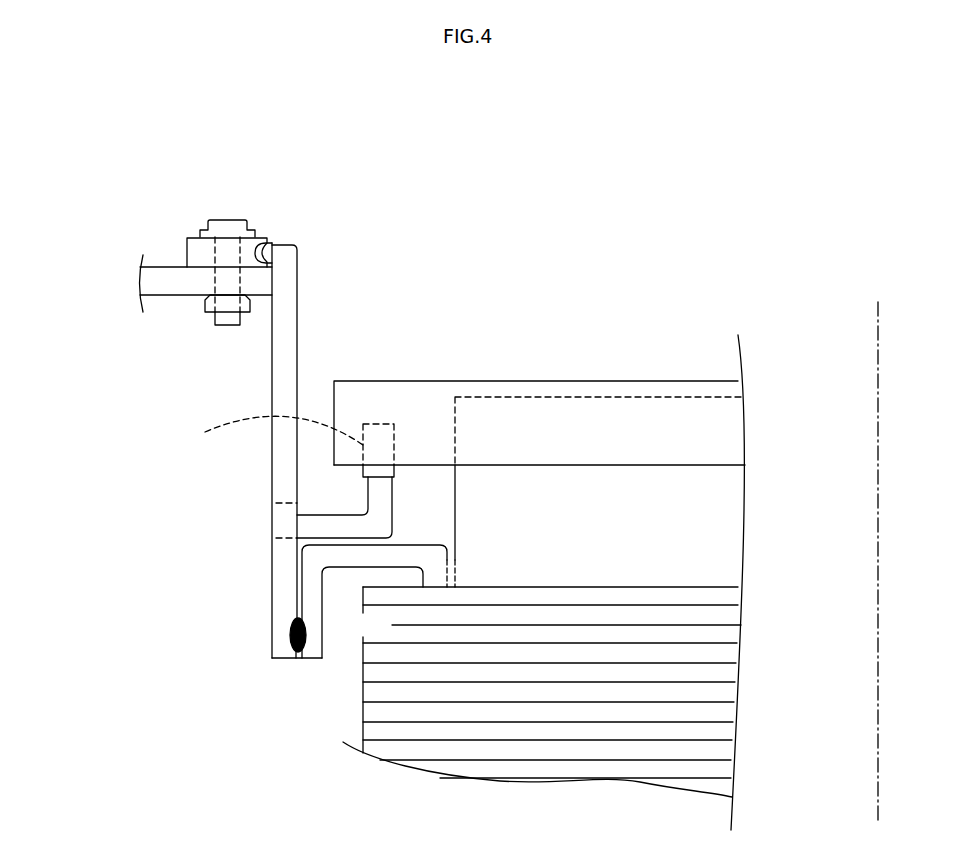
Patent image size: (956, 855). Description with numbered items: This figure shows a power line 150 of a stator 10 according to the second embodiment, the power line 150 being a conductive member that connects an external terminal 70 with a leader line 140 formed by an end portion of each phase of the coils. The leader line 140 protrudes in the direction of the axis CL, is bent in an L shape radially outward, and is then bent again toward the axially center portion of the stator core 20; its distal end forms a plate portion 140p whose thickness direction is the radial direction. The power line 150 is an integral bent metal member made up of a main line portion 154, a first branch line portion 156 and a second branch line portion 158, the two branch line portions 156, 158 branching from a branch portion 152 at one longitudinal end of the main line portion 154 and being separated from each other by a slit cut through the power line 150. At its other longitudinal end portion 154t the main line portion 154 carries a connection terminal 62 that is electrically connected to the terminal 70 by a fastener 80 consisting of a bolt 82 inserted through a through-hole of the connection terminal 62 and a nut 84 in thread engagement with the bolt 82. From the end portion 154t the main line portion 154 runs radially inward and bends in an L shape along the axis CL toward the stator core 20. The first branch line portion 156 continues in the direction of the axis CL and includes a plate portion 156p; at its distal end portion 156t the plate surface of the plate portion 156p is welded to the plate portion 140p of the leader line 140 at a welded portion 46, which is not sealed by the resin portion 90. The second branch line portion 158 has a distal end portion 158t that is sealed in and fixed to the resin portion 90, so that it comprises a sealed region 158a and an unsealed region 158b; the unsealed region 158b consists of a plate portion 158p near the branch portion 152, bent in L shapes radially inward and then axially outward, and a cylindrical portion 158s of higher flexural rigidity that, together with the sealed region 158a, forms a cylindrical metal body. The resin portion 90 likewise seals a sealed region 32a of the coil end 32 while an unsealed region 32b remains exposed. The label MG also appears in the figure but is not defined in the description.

The stator 10 is at (490, 265).
The motor generator MG is at (473, 160).
The axis CL is at (879, 552).
The stator core 20 is at (745, 688).
The coil end 32 is at (805, 440).
The sealed region 32a is at (723, 452).
The unsealed region 32b is at (723, 533).
The welded portion 46 is at (306, 632).
The connection terminal 62 is at (258, 265).
The terminal 70 is at (162, 290).
The fastener 80 is at (278, 166).
The bolt 82 is at (240, 228).
The nut 84 is at (208, 303).
The resin portion 90 is at (436, 400).
The leader line 140 is at (450, 568).
The plate portion 140p is at (313, 628).
The power line 150 is at (313, 322).
The branch portion 152 is at (270, 503).
The main line portion 154 is at (275, 387).
The longitudinal end portion 154t is at (258, 242).
The first branch line portion 156 is at (275, 573).
The plate portion 156p is at (286, 632).
The distal end portion 156t is at (278, 657).
The second branch line portion 158 is at (150, 413).
The sealed region 158a is at (259, 430).
The unsealed region 158b is at (213, 448).
The cylindrical portion 158s is at (363, 477).
The plate portion 158p is at (355, 530).
The distal end portion 158t is at (368, 443).